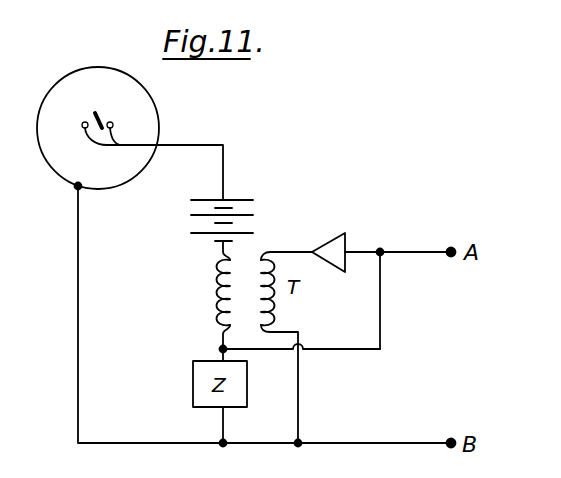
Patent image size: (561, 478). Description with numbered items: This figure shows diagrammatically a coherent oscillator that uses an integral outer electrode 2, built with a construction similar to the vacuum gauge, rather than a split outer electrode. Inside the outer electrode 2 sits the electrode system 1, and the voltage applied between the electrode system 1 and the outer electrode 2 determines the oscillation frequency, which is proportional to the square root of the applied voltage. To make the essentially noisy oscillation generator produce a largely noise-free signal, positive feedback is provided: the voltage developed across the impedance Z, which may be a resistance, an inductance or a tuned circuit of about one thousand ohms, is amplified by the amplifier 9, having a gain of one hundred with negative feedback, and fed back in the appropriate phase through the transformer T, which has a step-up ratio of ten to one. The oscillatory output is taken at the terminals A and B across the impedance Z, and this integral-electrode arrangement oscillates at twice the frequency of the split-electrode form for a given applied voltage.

The electrode system 1 is at (95, 113).
The outer electrode 2 is at (113, 68).
The amplifier 9 is at (341, 242).